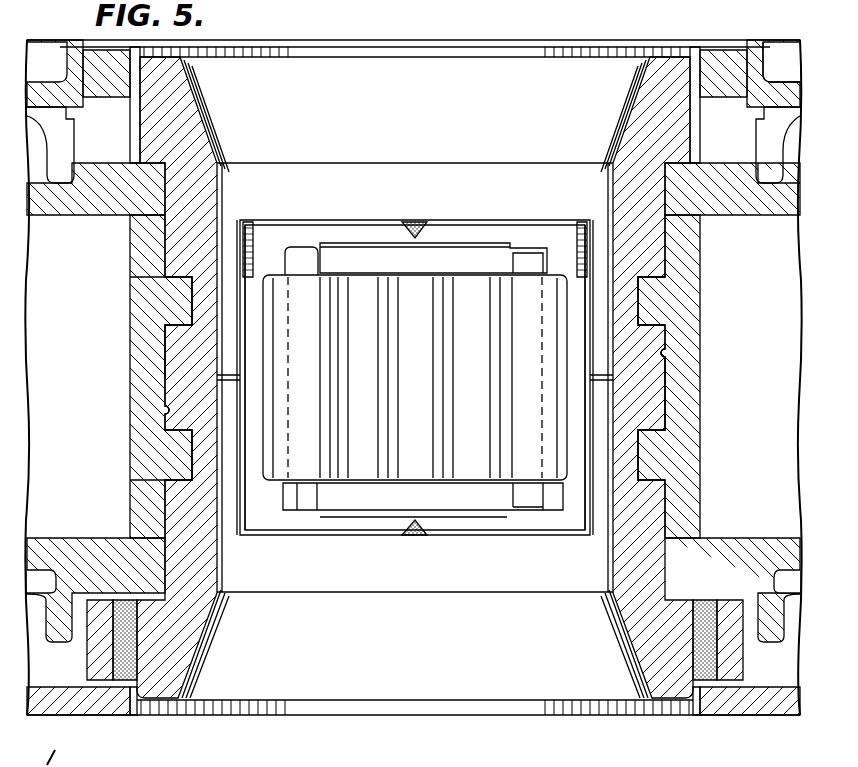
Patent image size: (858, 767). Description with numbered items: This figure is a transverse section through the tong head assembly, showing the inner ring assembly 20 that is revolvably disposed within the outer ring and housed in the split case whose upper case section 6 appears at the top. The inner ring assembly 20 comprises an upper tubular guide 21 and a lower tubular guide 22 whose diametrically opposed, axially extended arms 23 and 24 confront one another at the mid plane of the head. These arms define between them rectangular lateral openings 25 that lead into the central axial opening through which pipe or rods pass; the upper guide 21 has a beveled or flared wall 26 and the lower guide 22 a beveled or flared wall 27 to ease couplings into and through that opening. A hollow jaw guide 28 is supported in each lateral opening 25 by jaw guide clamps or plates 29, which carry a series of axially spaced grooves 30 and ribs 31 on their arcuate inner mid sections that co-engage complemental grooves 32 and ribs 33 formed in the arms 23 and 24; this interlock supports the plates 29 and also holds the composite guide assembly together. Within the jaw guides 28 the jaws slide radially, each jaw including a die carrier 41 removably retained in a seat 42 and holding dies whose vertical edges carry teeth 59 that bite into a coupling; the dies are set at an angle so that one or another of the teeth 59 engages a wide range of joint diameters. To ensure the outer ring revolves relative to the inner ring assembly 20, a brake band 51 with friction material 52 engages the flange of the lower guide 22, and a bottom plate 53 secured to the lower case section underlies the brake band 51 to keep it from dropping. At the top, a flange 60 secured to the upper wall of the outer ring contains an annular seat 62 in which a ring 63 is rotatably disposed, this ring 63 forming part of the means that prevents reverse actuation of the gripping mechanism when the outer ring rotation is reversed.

The upper case section 6 is at (30, 187).
The inner ring assembly 20 is at (201, 121).
The upper tubular guide 21 is at (660, 60).
The lower tubular guide 22 is at (640, 670).
The arms of upper guide 23 is at (182, 250).
The arms of lower guide 24 is at (182, 500).
The lateral openings 25 is at (500, 222).
The beveled or flared wall 26 is at (455, 66).
The beveled or flared wall 27 is at (378, 688).
The jaw guide 28 is at (363, 230).
The jaw guide clamp or plate 29 is at (137, 393).
The grooves 30 is at (170, 413).
The ribs 31 is at (190, 453).
The grooves 32 is at (192, 300).
The ribs 33 is at (173, 347).
The die carrier 41 is at (353, 467).
The seat 42 is at (311, 253).
The brake band 51 is at (708, 676).
The friction material 52 is at (731, 674).
The bottom plate 53 is at (80, 707).
The teeth 59 is at (388, 387).
The flange 60 is at (790, 86).
The annular seat 62 is at (759, 63).
The ring 63 is at (718, 58).